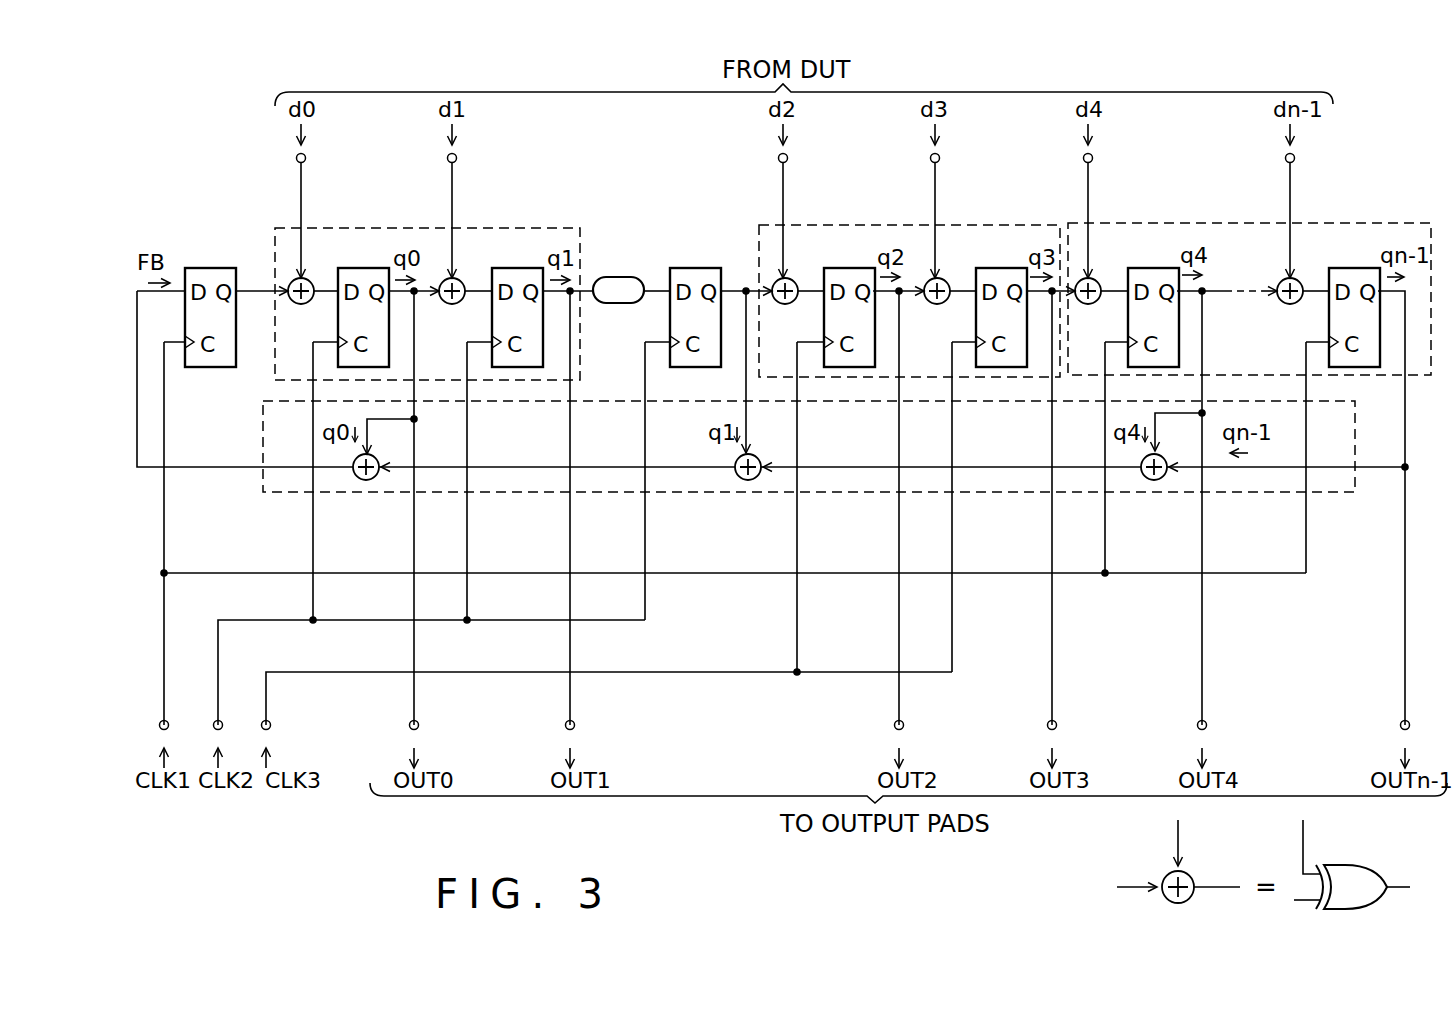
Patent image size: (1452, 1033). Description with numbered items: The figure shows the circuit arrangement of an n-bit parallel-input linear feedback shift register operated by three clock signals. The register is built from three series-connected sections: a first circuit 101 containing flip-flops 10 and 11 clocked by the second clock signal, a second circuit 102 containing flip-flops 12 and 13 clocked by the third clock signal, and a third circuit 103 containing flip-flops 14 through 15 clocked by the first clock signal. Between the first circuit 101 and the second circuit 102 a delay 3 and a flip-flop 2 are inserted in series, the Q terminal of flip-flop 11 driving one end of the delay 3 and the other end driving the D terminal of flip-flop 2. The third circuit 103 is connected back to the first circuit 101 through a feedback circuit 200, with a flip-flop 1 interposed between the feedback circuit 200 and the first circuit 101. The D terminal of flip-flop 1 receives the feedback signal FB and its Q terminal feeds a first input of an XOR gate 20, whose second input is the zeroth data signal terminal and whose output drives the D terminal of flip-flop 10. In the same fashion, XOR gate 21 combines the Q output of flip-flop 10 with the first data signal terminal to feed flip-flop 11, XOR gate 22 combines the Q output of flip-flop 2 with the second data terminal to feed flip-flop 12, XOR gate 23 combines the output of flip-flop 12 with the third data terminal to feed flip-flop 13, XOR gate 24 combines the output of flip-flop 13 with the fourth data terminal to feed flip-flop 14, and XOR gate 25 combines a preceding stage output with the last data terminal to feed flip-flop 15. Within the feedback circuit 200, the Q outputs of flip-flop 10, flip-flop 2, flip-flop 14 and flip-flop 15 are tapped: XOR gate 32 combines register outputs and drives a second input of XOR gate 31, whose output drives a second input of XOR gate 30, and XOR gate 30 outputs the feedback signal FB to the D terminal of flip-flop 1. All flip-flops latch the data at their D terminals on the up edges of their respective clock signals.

The flip-flop 1 is at (207, 268).
The flip-flop 2 is at (700, 266).
The delay 3 is at (614, 277).
The flip-flop 10 is at (364, 268).
The flip-flop 11 is at (520, 268).
The flip-flop 12 is at (846, 266).
The flip-flop 13 is at (1000, 266).
The flip-flop 14 is at (1146, 266).
The flip-flop 15 is at (1351, 266).
The XOR gate 20 is at (301, 304).
The XOR gate 21 is at (452, 304).
The XOR gate 22 is at (785, 304).
The XOR gate 23 is at (937, 304).
The XOR gate 24 is at (1088, 304).
The XOR gate 25 is at (1290, 304).
The XOR gate 30 is at (378, 459).
The XOR gate 31 is at (757, 456).
The XOR gate 32 is at (1164, 457).
The first circuit 101 is at (400, 226).
The second circuit 102 is at (890, 225).
The third circuit 103 is at (1210, 222).
The feedback circuit 200 is at (685, 493).